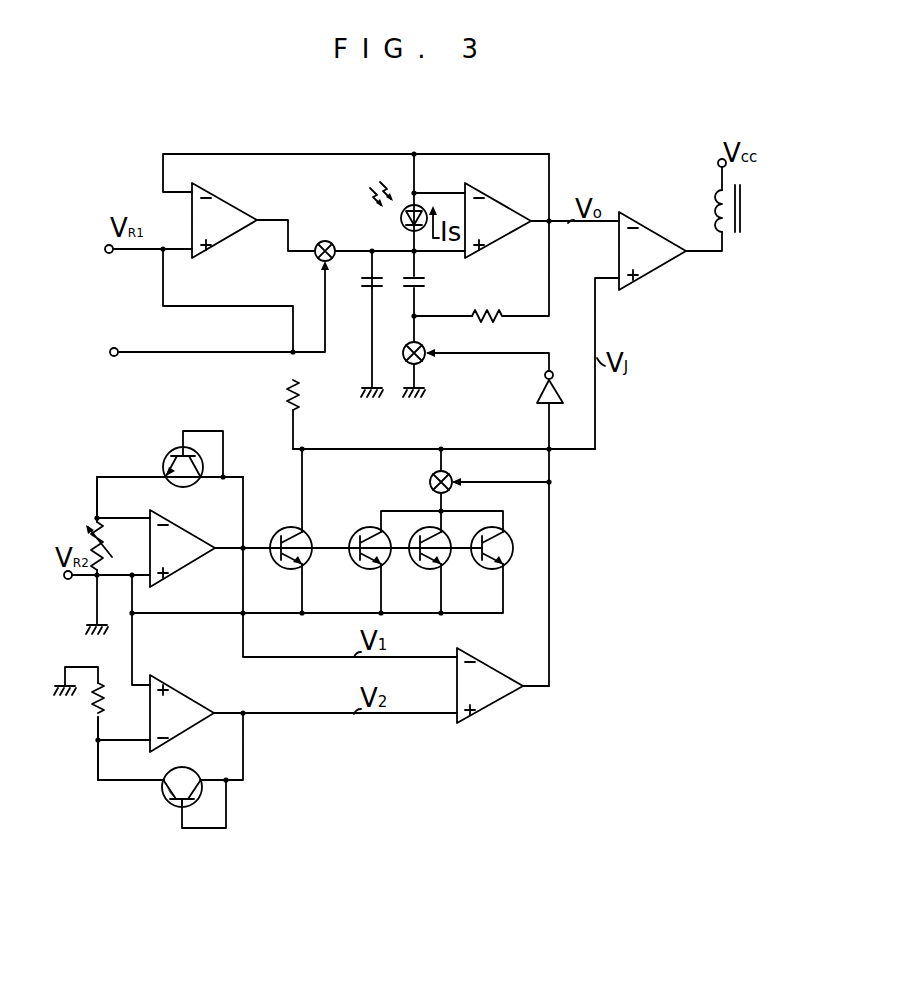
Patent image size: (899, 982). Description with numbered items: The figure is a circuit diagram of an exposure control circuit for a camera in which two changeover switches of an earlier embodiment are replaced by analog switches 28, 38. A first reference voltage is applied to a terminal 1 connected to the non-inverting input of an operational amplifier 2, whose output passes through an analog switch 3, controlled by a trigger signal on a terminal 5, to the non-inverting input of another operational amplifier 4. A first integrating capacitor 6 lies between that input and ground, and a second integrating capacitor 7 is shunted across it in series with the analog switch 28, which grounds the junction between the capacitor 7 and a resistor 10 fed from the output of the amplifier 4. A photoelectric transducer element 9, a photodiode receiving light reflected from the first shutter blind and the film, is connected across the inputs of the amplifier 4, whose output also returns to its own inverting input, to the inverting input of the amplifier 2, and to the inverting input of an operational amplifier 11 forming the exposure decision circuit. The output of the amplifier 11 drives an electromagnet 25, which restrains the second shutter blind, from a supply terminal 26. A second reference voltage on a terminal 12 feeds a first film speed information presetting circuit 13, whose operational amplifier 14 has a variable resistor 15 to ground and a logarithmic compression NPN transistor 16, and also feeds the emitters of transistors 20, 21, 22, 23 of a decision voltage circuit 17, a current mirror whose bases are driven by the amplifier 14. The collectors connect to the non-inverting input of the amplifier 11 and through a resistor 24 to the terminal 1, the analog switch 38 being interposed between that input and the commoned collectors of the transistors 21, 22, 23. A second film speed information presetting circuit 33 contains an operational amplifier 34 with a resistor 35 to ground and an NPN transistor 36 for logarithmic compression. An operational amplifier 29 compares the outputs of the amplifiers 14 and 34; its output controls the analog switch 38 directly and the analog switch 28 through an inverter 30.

The terminal 1 is at (105, 251).
The operational amplifier 2 is at (217, 206).
The analog switch 3 is at (322, 240).
The operational amplifier 4 is at (487, 203).
The terminal 5 is at (110, 354).
The first integrating capacitor 6 is at (362, 283).
The second integrating capacitor 7 is at (422, 283).
The photoelectric transducer element 9 is at (405, 207).
The resistor 10 is at (482, 312).
The operational amplifier 11 is at (648, 268).
The terminal 12 is at (66, 579).
The film speed information presetting circuit 13 is at (82, 499).
The operational amplifier 14 is at (178, 535).
The variable resistor 15 is at (105, 543).
The NPN transistor 16 is at (165, 463).
The decision voltage circuit 17 is at (418, 430).
The transistor 20 is at (300, 537).
The transistor 21 is at (368, 566).
The transistor 22 is at (430, 566).
The transistor 23 is at (492, 566).
The resistor 24 is at (300, 402).
The electromagnet 25 is at (742, 208).
The terminal 26 is at (718, 163).
The analog switch 28 is at (422, 347).
The operational amplifier 29 is at (489, 672).
The inverter 30 is at (540, 395).
The second film speed information presetting circuit 33 is at (80, 760).
The operational amplifier 34 is at (188, 702).
The resistor 35 is at (104, 706).
The NPN transistor 36 is at (193, 777).
The analog switch 38 is at (430, 480).